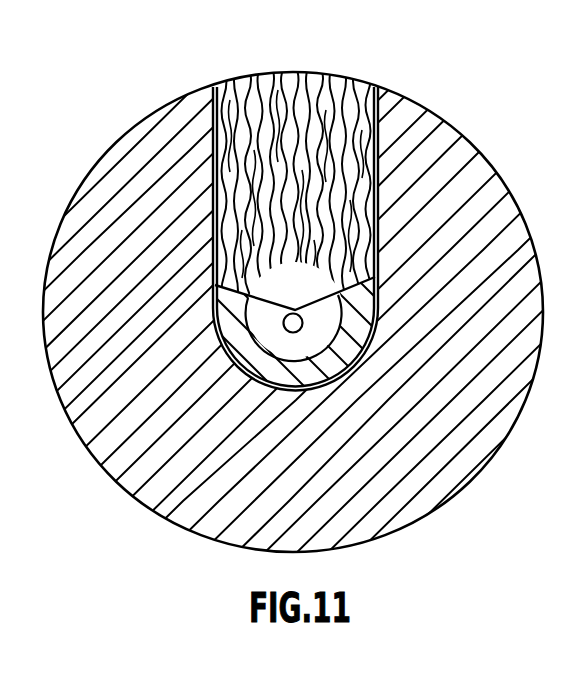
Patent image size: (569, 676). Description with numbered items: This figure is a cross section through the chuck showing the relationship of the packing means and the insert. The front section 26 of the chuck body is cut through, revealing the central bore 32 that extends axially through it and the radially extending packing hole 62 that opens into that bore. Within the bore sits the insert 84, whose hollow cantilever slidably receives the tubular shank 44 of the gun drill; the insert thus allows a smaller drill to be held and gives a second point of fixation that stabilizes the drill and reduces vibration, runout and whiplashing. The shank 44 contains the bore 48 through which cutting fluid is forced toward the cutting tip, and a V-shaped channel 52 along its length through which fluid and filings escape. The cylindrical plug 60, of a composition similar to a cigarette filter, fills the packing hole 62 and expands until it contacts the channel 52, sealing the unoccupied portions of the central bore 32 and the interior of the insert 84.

The front section 26 is at (463, 158).
The central bore 32 is at (210, 275).
The shank 44 is at (363, 360).
The bore 48 is at (303, 322).
The V-shaped channel 52 is at (380, 316).
The cylindrical plug 60 is at (355, 92).
The packing hole 62 is at (383, 132).
The insert 84 is at (237, 351).